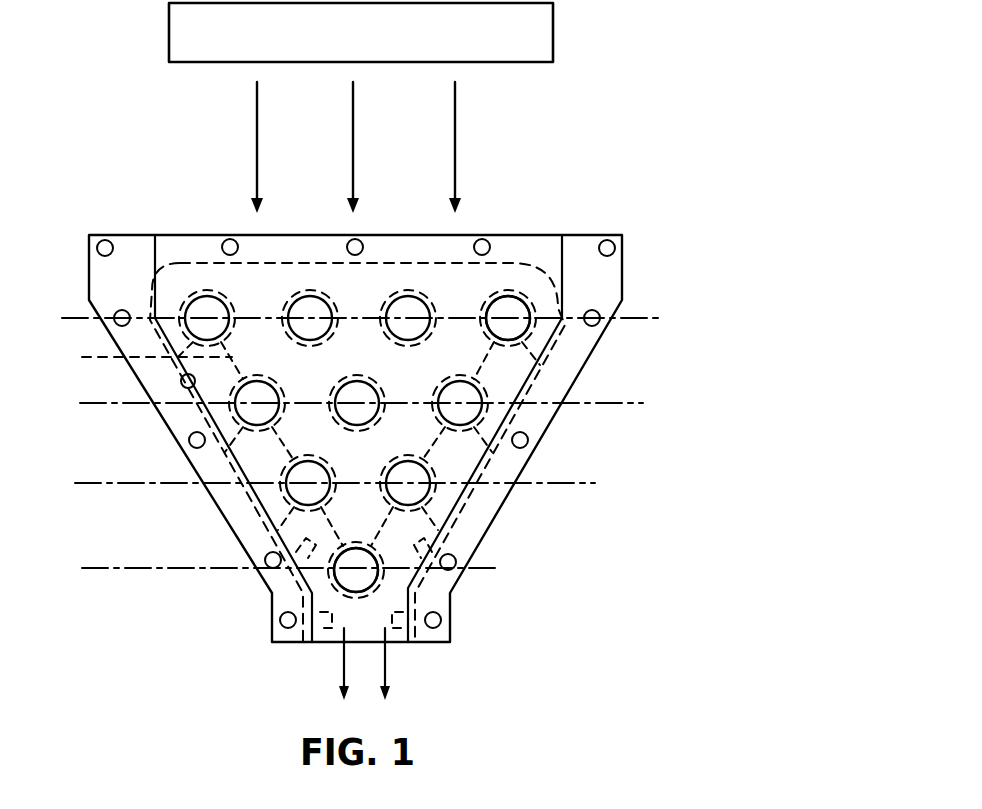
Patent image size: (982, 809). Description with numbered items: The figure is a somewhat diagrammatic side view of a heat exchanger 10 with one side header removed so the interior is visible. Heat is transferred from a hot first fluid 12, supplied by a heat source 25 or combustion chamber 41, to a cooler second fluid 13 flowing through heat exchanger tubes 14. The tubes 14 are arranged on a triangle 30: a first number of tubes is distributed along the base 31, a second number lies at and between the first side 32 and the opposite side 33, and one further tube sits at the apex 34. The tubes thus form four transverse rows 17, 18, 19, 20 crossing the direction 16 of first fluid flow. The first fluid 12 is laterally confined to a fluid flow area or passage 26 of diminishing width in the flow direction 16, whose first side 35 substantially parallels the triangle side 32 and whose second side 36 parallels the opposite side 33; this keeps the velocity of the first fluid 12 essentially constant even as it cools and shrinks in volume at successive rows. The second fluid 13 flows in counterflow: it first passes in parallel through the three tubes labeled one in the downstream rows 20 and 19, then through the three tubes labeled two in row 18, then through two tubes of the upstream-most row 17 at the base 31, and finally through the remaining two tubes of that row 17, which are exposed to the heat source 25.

The heat exchanger 10 is at (200, 507).
The first fluid 12 is at (257, 151).
The cooler second fluid 13 is at (524, 323).
The heat exchanger tubes 14 is at (400, 548).
The direction of flow of first fluid 16 is at (353, 139).
The first row of heat exchanger tubes 17 is at (345, 316).
The second row of heat exchanger tubes 18 is at (342, 406).
The third row of heat exchanger tubes 19 is at (316, 483).
The fourth row of heat exchanger tubes 20 is at (272, 574).
The heat source 25 is at (169, 31).
The fluid flow area or passage 26 is at (238, 452).
The triangle 30 is at (500, 366).
The base of triangle 31 is at (468, 312).
The first side of triangle 32 is at (137, 354).
The opposite side of triangle 33 is at (490, 459).
The apex of triangle 34 is at (352, 578).
The first side of passage 35 is at (187, 379).
The second side of passage 36 is at (503, 397).
The combustion chamber 41 is at (421, 173).